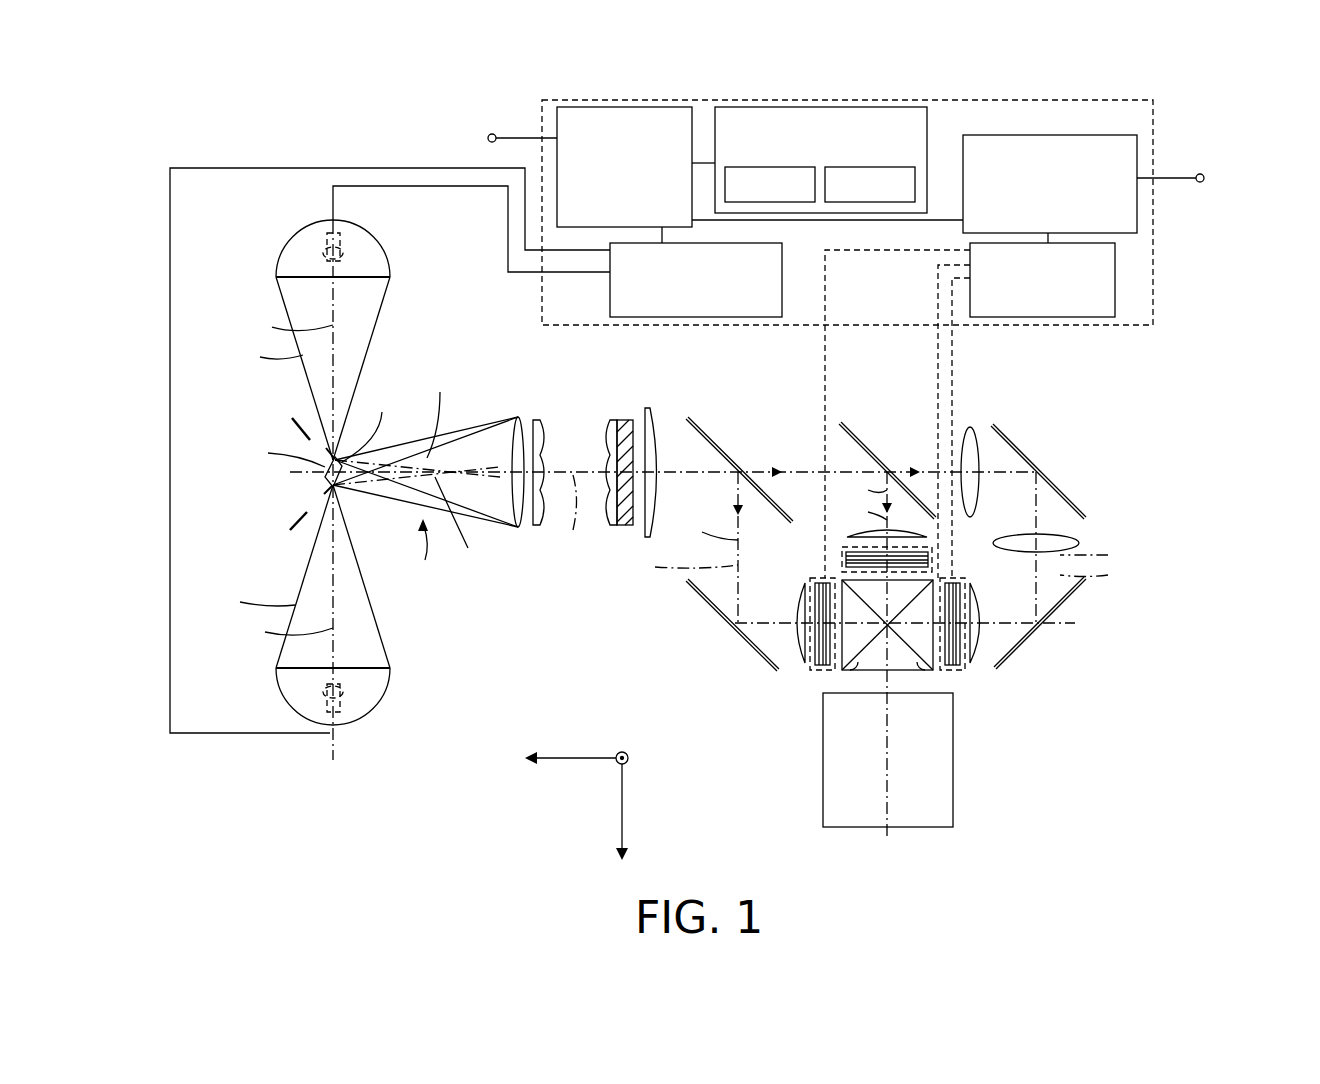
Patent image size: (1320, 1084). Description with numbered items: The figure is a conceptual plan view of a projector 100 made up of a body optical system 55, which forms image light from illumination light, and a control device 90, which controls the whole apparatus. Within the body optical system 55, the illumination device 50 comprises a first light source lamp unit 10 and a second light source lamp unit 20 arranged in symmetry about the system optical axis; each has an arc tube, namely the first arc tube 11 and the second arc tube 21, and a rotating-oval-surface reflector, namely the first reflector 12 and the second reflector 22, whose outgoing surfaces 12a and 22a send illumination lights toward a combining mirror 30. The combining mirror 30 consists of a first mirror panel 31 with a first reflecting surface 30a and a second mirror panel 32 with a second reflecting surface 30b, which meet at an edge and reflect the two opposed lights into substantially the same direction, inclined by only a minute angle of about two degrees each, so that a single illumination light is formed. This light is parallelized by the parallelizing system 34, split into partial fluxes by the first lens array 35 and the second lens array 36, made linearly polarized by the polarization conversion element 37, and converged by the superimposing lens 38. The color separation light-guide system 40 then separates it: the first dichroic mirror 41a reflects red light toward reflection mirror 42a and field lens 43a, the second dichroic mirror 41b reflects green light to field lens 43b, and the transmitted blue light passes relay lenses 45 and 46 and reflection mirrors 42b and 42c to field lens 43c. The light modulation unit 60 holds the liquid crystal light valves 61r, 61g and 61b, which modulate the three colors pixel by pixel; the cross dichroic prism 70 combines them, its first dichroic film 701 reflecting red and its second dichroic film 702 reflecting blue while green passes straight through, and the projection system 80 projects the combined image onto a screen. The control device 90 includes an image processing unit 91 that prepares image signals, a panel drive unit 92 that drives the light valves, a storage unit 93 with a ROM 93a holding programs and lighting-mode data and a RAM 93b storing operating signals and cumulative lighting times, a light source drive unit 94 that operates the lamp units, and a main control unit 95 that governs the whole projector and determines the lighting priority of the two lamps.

The projector 100 is at (1275, 83).
The body optical system 55 is at (284, 153).
The second light source lamp unit 20 is at (404, 291).
The second arc tube 21 is at (320, 245).
The second reflector 22 is at (385, 240).
The outgoing surface 22a is at (300, 282).
The first light source lamp unit 10 is at (404, 660).
The first arc tube 11 is at (305, 705).
The first reflector 12 is at (385, 690).
The outgoing surface 12a is at (300, 660).
The combining mirror 30 is at (292, 479).
The first reflecting surface 30a is at (322, 498).
The second reflecting surface 30b is at (325, 442).
The first mirror panel 31 is at (312, 482).
The second mirror panel 32 is at (318, 450).
The illumination device 50 is at (536, 628).
The parallelizing system 34 is at (518, 417).
The first lens array 35 is at (538, 527).
The second lens array 36 is at (608, 424).
The polarization conversion element 37 is at (625, 420).
The superimposing lens 38 is at (651, 408).
The color separation light-guide system 40 is at (1059, 397).
The first dichroic mirror 41a is at (716, 440).
The second dichroic mirror 41b is at (858, 437).
The reflection mirror 42a is at (690, 600).
The reflection mirror 42b is at (1040, 452).
The reflection mirror 42c is at (1065, 600).
The field lens 43a is at (793, 635).
The field lens 43b is at (847, 535).
The field lens 43c is at (988, 640).
The relay lens 45 is at (970, 427).
The relay lens 46 is at (1078, 543).
The cross dichroic prism 70 is at (909, 679).
The light modulation unit 60 is at (798, 654).
The liquid crystal light valve 61r is at (820, 672).
The liquid crystal light valve 61g is at (842, 560).
The liquid crystal light valve 61b is at (960, 672).
The first dichroic film 701 is at (925, 670).
The second dichroic film 702 is at (855, 668).
The projection system 80 is at (835, 805).
The control device 90 is at (542, 112).
The image processing unit 91 is at (1065, 135).
The panel drive unit 92 is at (1032, 317).
The storage unit 93 is at (870, 107).
The ROM 93a is at (770, 168).
The RAM 93b is at (870, 168).
The light source drive unit 94 is at (610, 283).
The main control unit 95 is at (625, 107).